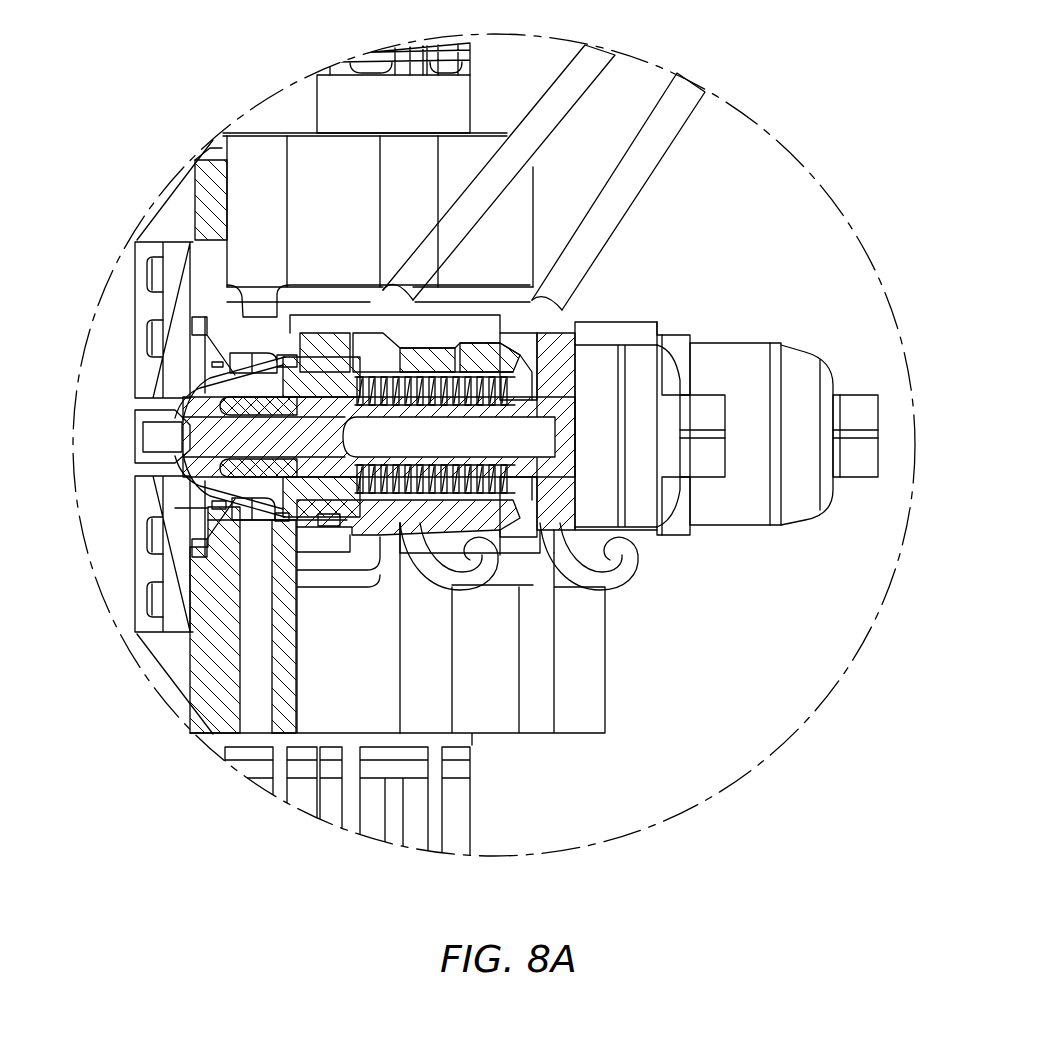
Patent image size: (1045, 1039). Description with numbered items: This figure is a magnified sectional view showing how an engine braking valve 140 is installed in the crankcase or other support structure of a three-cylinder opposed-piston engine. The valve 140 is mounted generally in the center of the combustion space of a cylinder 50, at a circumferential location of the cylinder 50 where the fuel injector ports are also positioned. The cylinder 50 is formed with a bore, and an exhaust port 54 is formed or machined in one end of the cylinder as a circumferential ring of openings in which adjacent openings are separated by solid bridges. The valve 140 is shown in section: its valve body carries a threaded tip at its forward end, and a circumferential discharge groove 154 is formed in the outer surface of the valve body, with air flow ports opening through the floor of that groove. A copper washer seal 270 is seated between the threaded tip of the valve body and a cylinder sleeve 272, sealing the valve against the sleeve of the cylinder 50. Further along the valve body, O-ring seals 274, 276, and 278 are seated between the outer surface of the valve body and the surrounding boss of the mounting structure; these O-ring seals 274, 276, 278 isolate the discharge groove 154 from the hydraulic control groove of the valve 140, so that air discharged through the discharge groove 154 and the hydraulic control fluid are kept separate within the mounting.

The cylinder 50 is at (152, 243).
The exhaust port 54 is at (296, 824).
The engine braking valve 140 is at (565, 395).
The circumferential discharge groove 154 is at (253, 503).
The copper washer seal 270 is at (176, 470).
The cylinder sleeve 272 is at (173, 312).
The O-ring seal 274 is at (222, 506).
The O-ring seal 276 is at (283, 520).
The O-ring seal 278 is at (330, 520).